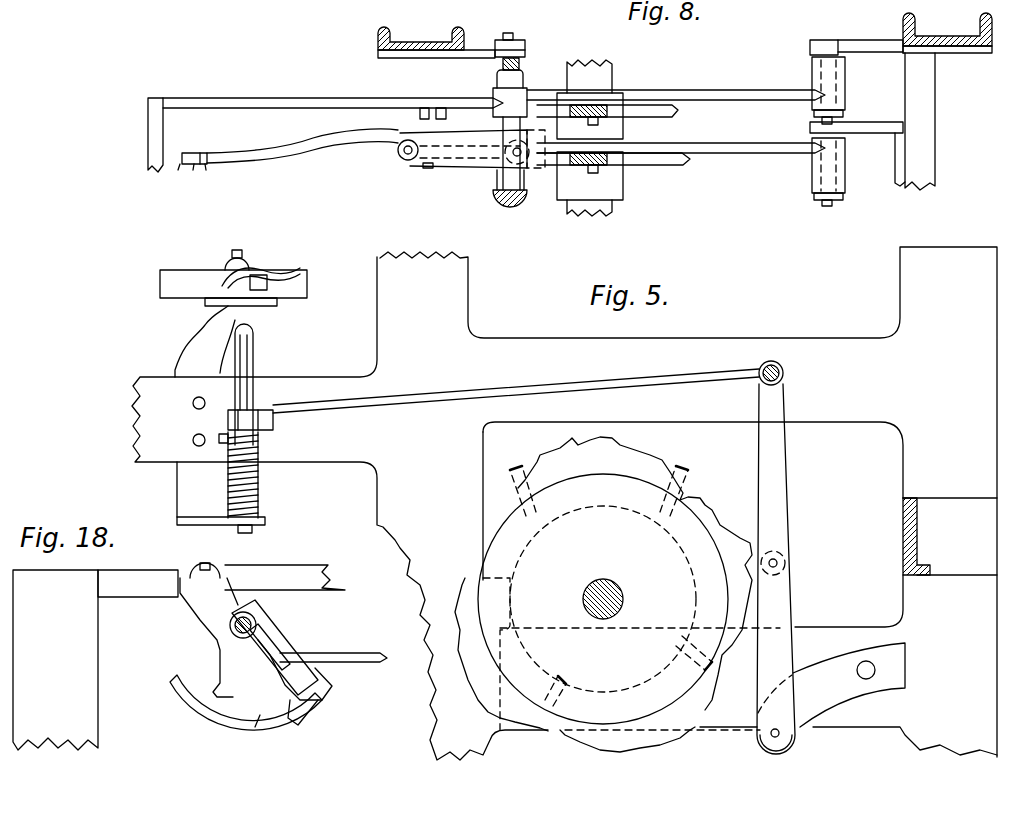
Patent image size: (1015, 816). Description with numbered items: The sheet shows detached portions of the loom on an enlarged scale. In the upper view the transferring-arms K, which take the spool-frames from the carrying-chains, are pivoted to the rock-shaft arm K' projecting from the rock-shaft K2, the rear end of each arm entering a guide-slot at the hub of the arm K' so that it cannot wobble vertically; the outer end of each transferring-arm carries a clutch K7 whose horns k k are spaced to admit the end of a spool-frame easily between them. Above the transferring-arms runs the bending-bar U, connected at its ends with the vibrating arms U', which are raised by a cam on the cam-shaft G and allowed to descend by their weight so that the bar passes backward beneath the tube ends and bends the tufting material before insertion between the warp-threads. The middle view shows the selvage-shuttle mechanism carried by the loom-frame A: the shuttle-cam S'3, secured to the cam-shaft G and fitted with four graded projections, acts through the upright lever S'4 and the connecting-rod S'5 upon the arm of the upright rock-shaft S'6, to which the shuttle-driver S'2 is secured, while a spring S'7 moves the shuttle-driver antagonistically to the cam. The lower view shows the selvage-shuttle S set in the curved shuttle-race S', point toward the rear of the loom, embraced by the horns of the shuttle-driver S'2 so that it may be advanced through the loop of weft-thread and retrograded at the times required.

In FIG. 8, the bending-bar U is at (134, 135).
In FIG. 8, the vibrating arms U' is at (333, 97).
In FIG. 8, the transferring-arms K is at (312, 143).
In FIG. 8, the rock-shaft arm K' is at (472, 166).
In FIG. 8, the rock-shaft K2 is at (516, 206).
In FIG. 8, the clutch K7 is at (176, 142).
In FIG. 8, the horns k is at (178, 172).
In FIG. 8, the cam-shaft G is at (592, 226).
In FIG. 5, the cam-shaft G is at (603, 579).
In FIG. 5, the loom-frame A is at (564, 503).
In FIG. 5, the shuttle-race S' is at (233, 323).
In FIG. 18, the shuttle-race S' is at (246, 703).
In FIG. 5, the shuttle-driver S'2 is at (261, 260).
In FIG. 18, the shuttle-driver S'2 is at (274, 662).
In FIG. 5, the shuttle-cam S'3 is at (617, 594).
In FIG. 5, the upright lever S'4 is at (773, 557).
In FIG. 5, the connecting-rod S'5 is at (516, 388).
In FIG. 18, the connecting-rod S'5 is at (333, 645).
In FIG. 5, the upright rock-shaft S'6 is at (255, 384).
In FIG. 5, the spring S'7 is at (235, 482).
In FIG. 18, the selvage-shuttle S is at (270, 647).